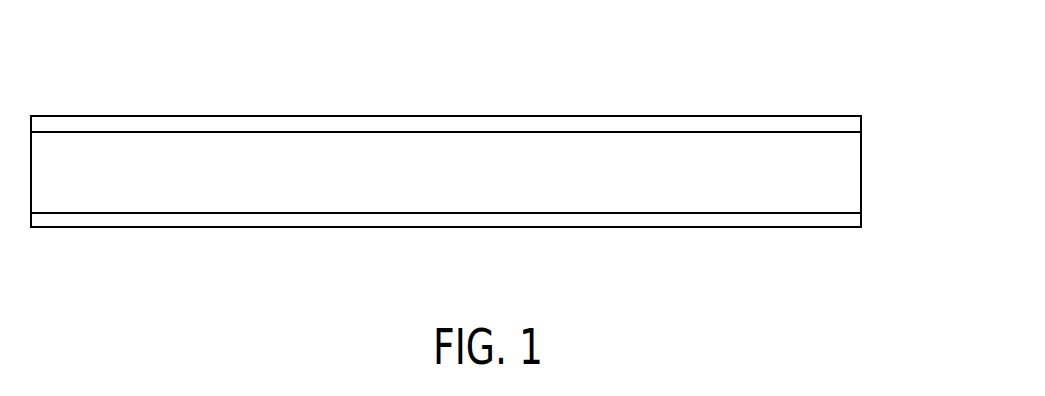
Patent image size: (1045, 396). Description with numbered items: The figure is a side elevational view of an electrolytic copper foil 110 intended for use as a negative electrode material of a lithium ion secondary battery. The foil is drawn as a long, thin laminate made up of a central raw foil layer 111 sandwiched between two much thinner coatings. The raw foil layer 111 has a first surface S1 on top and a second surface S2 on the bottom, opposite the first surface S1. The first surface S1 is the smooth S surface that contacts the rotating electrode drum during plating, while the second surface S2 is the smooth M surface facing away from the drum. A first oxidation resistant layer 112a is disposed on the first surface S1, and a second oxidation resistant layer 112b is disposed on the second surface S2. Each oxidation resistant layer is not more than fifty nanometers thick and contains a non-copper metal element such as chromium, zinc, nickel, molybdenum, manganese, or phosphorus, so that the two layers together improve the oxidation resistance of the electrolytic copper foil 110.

The electrolytic copper foil 110 is at (81, 57).
The raw foil layer 111 is at (845, 178).
The first oxidation resistant layer 112a is at (845, 124).
The second oxidation resistant layer 112b is at (845, 218).
The first surface S1 is at (490, 131).
The second surface S2 is at (490, 213).